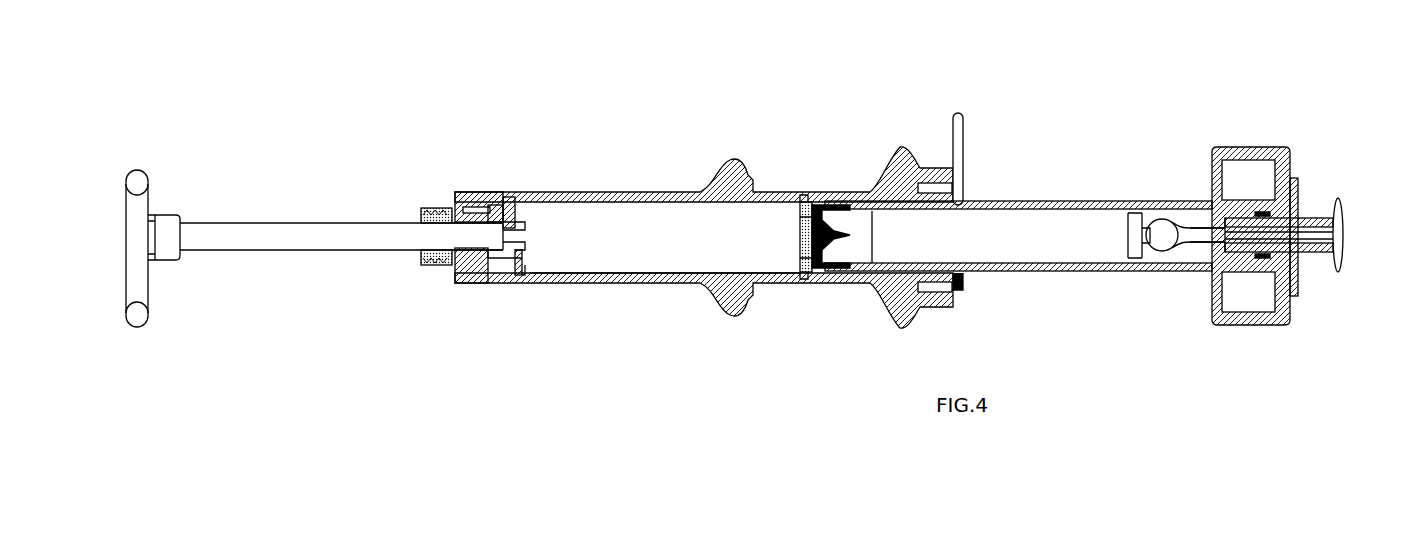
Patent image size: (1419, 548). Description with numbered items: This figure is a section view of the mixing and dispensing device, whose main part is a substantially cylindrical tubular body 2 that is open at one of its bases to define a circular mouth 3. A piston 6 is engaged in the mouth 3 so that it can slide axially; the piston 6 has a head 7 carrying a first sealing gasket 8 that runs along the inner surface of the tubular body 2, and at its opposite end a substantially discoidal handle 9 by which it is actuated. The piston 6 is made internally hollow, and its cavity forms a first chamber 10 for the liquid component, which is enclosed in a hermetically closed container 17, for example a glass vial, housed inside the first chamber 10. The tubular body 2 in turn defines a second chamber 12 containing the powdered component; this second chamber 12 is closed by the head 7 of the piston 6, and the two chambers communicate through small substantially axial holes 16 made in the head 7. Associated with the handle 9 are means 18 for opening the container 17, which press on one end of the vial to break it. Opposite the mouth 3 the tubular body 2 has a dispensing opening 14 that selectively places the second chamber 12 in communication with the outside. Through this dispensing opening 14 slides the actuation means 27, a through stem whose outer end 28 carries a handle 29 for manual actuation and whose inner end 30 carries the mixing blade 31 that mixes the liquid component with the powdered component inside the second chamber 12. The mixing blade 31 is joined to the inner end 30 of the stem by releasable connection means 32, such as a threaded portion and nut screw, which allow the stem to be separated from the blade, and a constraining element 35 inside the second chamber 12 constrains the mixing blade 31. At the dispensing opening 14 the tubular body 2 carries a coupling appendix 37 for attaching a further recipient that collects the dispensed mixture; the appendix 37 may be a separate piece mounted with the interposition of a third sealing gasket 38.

The tubular body 2 is at (615, 182).
The circular mouth 3 is at (963, 285).
The piston 6 is at (1050, 200).
The head 7 is at (797, 232).
The first sealing gasket 8 is at (810, 200).
The handle 9 is at (1263, 150).
The first chamber 10 is at (1207, 257).
The second chamber 12 is at (594, 267).
The dispensing opening 14 is at (468, 237).
The axial holes 16 is at (800, 255).
The container 17 is at (1090, 225).
The means for opening the container 18 is at (1352, 198).
The actuation means 27 is at (308, 233).
The outer end 28 is at (205, 243).
The handle 29 is at (137, 324).
The inner end 30 is at (490, 200).
The mixing blade 31 is at (525, 262).
The releasable connection means 32 is at (504, 200).
The constraining element 35 is at (465, 193).
The appendix 37 is at (420, 270).
The third sealing gasket 38 is at (452, 204).